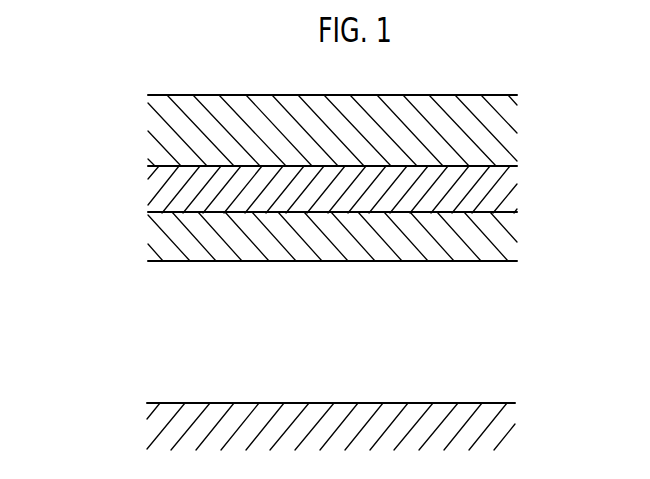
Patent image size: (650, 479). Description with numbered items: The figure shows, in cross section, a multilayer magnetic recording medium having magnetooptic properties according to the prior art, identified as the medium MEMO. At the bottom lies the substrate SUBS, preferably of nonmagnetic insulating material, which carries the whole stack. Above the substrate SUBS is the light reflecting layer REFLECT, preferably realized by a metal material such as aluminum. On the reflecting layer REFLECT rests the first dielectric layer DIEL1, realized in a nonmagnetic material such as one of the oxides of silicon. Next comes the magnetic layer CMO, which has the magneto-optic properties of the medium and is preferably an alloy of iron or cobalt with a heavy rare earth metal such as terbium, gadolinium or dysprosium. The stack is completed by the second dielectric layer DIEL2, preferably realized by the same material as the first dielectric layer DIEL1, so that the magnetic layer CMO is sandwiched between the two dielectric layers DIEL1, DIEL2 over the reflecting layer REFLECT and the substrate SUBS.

The magnetic recording medium MEMO is at (98, 195).
The second dielectric layer DIEL2 is at (366, 130).
The magnetic layer CMO is at (360, 189).
The first dielectric layer DIEL1 is at (366, 236).
The light reflecting layer REFLECT is at (569, 335).
The substrate SUBS is at (366, 426).